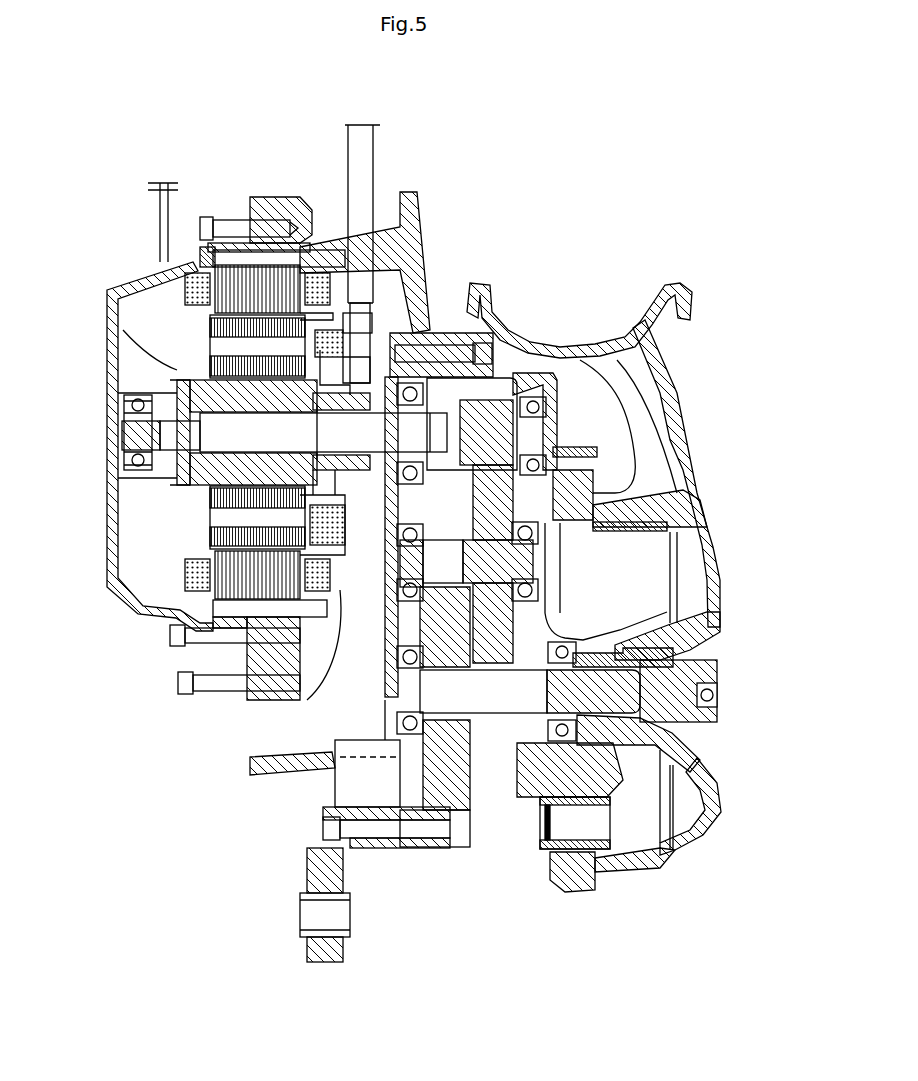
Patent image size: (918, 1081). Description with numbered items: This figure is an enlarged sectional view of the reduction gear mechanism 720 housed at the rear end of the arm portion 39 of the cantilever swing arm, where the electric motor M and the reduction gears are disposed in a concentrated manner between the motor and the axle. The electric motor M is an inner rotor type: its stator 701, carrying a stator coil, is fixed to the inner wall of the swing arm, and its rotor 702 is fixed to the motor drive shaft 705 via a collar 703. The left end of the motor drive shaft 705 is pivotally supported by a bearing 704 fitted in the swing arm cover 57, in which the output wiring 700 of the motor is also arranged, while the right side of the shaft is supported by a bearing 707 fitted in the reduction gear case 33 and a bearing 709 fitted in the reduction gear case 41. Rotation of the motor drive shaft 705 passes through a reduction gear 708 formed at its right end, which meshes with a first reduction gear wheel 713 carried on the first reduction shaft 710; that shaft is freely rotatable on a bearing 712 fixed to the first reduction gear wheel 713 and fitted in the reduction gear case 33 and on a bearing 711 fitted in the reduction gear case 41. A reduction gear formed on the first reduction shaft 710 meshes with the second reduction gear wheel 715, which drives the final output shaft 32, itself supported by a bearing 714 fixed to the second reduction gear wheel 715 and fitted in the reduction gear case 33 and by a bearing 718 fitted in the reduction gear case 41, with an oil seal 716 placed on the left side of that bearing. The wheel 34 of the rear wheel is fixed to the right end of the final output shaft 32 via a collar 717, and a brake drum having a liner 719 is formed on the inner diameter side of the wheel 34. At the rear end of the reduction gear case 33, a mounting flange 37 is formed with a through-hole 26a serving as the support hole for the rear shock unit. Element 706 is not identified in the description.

The output wiring 700 is at (347, 161).
The stator 701 is at (247, 266).
The rotor 702 is at (210, 337).
The collar 703 is at (197, 378).
The bearing 704 is at (130, 405).
The motor drive shaft 705 is at (227, 447).
The swing arm cover 57 is at (108, 522).
The electric motor M is at (202, 517).
The arm portion 39 is at (417, 237).
The case wall 706 is at (378, 350).
The bearing 707 is at (488, 398).
The reduction gear 708 is at (523, 372).
The reduction gear mechanism 720 is at (557, 405).
The bearing 709 is at (598, 385).
The first reduction shaft 710 is at (450, 540).
The bearing 711 is at (580, 545).
The bearing 712 is at (360, 597).
The first reduction gear wheel 713 is at (580, 603).
The collar 717 is at (647, 647).
The final output shaft 32 is at (700, 708).
The bearing 718 is at (600, 742).
The wheel 34 is at (707, 787).
The liner 719 is at (620, 830).
The oil seal 716 is at (518, 735).
The reduction gear case 41 is at (540, 777).
The second reduction gear wheel 715 is at (447, 787).
The bearing 714 is at (385, 758).
The reduction gear case 33 is at (390, 842).
The mounting flange 37 is at (310, 880).
The through-hole 26a is at (300, 915).